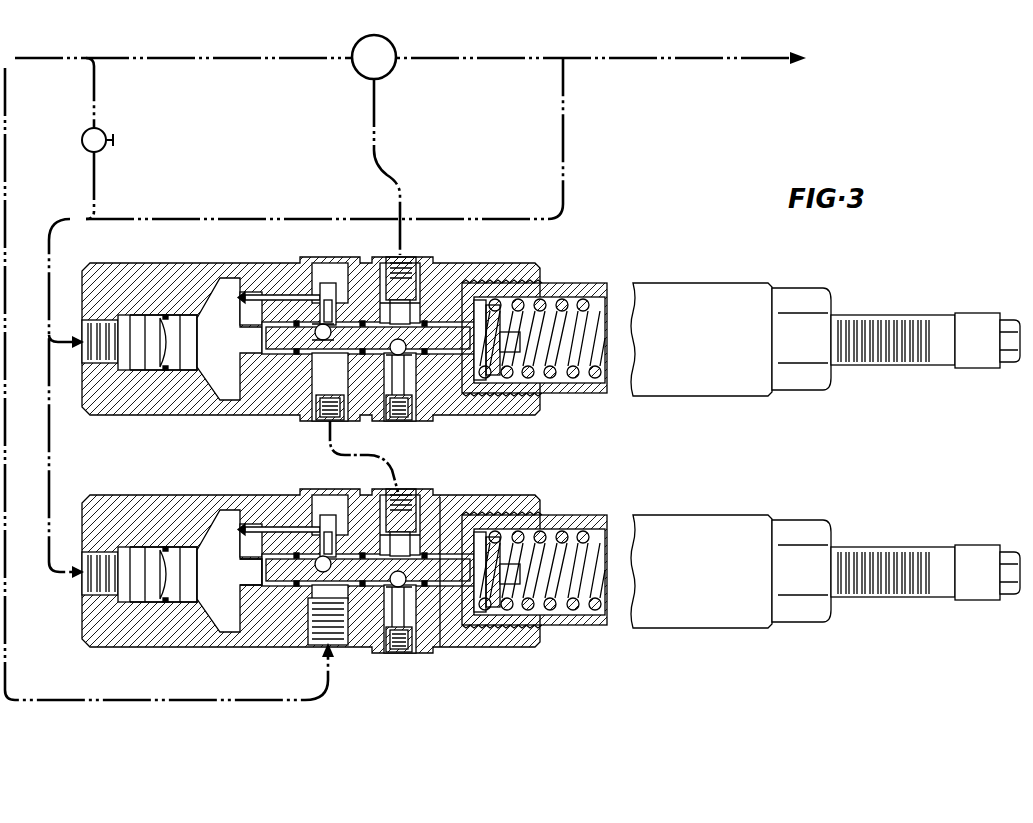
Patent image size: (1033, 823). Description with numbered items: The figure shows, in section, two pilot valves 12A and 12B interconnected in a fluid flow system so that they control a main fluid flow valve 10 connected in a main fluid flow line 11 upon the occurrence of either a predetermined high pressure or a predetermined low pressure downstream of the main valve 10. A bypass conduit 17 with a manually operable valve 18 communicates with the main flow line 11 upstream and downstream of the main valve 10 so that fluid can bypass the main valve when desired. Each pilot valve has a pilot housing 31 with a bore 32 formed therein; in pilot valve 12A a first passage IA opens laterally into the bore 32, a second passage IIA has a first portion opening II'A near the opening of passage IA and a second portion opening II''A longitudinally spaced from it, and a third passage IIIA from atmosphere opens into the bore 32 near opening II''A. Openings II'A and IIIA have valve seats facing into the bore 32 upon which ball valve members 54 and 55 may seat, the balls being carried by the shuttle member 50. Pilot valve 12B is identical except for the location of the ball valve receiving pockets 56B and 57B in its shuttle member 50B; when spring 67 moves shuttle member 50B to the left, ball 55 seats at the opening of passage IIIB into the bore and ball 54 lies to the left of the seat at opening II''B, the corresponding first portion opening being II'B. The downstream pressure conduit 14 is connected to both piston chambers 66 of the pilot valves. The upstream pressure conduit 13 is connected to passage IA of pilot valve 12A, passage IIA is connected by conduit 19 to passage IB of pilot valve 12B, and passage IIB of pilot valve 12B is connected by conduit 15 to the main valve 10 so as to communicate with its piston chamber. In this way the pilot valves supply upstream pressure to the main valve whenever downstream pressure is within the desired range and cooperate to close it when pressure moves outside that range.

The main fluid flow valve 10 is at (378, 36).
The main fluid flow line 11 is at (182, 56).
The upstream pressure conduit 13 is at (94, 698).
The downstream pressure conduit 14 is at (565, 156).
The conduit 15 is at (396, 182).
The bypass conduit 17 is at (98, 110).
The manually operable valve 18 is at (83, 137).
The conduit 19 is at (346, 452).
The pilot valve 12A is at (655, 512).
The pilot valve 12B is at (597, 254).
The pilot housing 31 is at (522, 500).
The bore 32 is at (245, 582).
The shuttle member 50 is at (285, 525).
The shuttle member 50B is at (270, 318).
The ball valve member 54 is at (312, 340).
The ball valve member 55 is at (400, 368).
The ball valve receiving pocket 56B is at (326, 362).
The ball valve receiving pocket 57B is at (412, 352).
The piston chamber 66 is at (142, 398).
The spring 67 is at (558, 393).
The first passage IA is at (340, 646).
The first passage IB is at (322, 405).
The second passage IIA is at (404, 505).
The second passage IIB is at (404, 270).
The first portion opening of second passage II'A is at (320, 510).
The first portion opening of second passage II'B is at (330, 276).
The second portion opening of second passage II''A is at (428, 502).
The second portion opening of second passage II''B is at (428, 271).
The third passage IIIA is at (398, 640).
The third passage IIIB is at (398, 408).